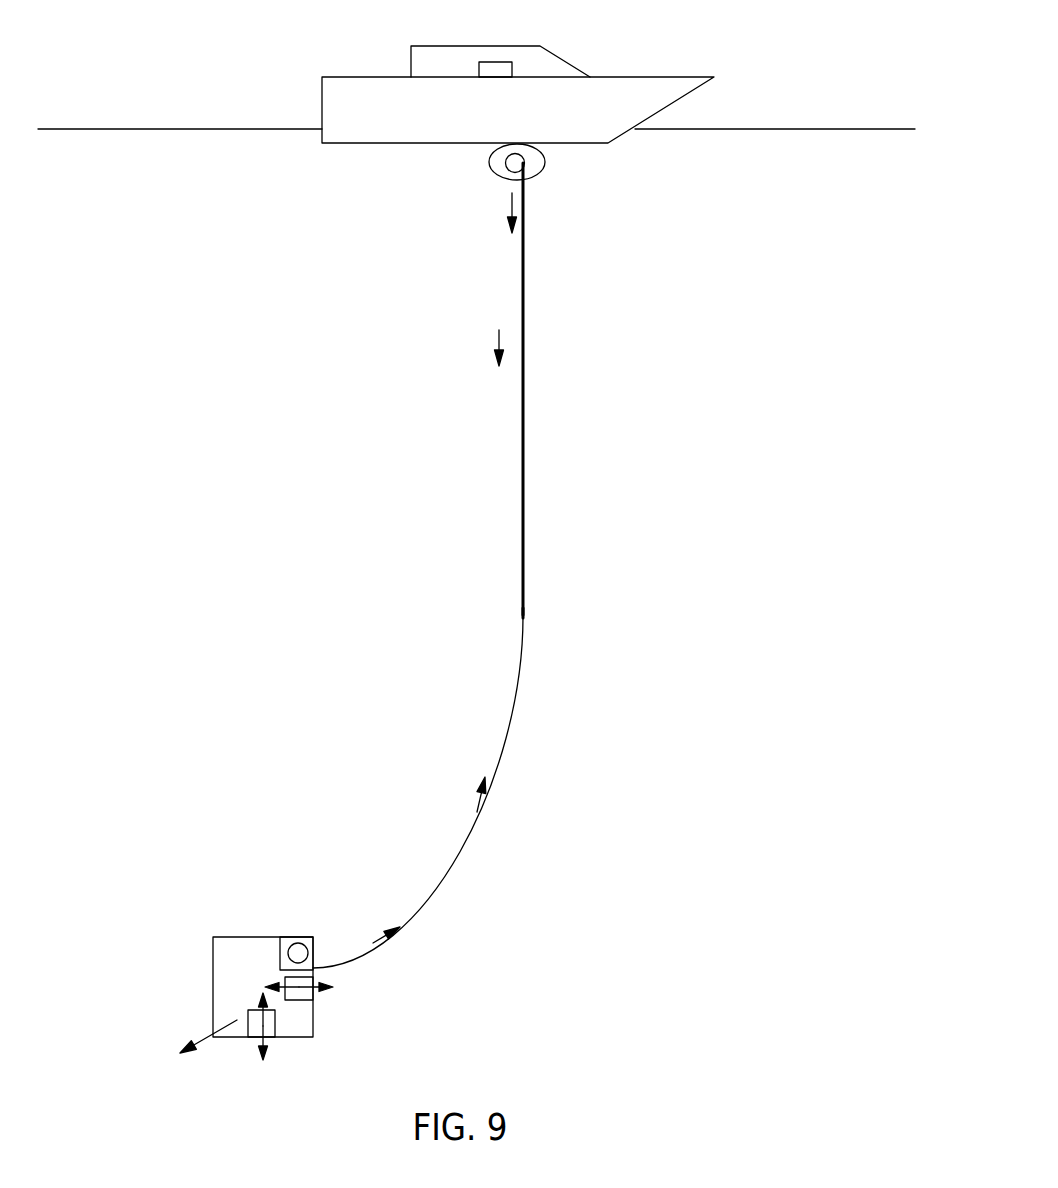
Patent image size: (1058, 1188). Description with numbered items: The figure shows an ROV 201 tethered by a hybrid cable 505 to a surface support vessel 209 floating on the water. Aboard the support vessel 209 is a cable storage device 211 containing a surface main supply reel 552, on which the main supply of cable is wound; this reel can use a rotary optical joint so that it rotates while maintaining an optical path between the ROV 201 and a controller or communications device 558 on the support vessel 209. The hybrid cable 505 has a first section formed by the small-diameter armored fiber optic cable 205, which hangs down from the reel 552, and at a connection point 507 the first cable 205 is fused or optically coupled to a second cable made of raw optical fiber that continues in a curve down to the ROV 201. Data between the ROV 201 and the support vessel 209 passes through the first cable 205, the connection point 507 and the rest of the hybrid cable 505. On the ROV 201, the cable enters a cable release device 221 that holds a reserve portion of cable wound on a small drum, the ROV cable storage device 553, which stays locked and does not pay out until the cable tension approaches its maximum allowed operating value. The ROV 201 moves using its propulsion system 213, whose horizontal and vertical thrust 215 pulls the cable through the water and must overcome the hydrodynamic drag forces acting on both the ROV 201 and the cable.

The support vessel 209 is at (345, 82).
The controller or communications device 558 is at (497, 70).
The cable storage device 211 is at (537, 167).
The surface main supply reel 552 is at (503, 170).
The cable 205 is at (522, 431).
The connection point 507 is at (522, 612).
The hybrid cable 505 is at (468, 853).
The ROV 201 is at (215, 978).
The cable release device 221 is at (308, 937).
The cable storage device 553 is at (290, 947).
The propulsion system 213 is at (300, 1036).
The thrust 215 is at (325, 993).